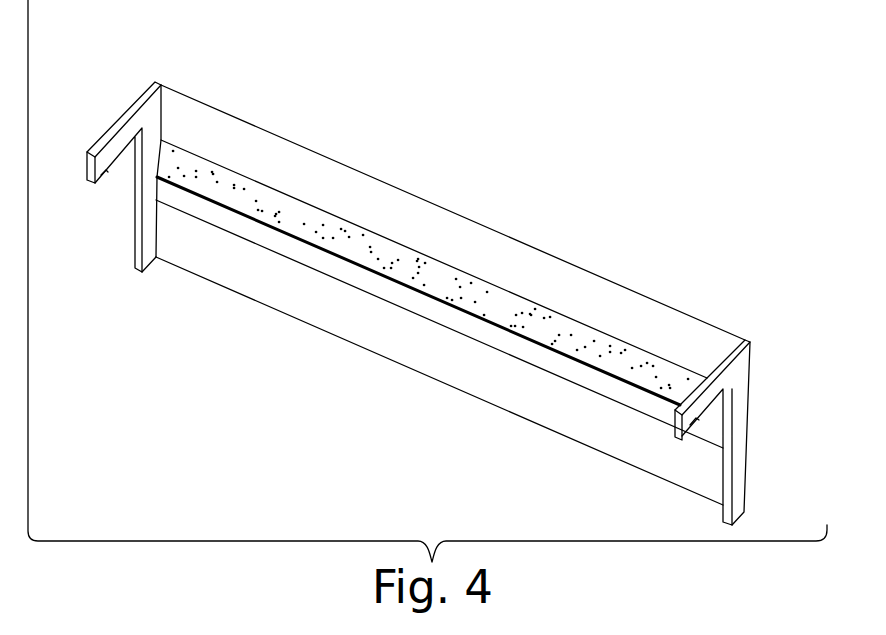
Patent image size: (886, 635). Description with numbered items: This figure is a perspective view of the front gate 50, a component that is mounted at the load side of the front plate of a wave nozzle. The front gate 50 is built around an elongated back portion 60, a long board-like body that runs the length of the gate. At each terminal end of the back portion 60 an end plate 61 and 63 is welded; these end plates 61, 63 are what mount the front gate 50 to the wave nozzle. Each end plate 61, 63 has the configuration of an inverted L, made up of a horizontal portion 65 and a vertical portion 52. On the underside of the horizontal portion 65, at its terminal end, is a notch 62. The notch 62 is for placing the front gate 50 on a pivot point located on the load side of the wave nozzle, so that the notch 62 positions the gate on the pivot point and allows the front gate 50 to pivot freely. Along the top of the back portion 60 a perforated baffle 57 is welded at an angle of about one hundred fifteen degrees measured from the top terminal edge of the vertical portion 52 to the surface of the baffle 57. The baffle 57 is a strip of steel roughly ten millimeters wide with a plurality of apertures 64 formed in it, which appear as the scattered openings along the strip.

The front gate 50 is at (483, 92).
The vertical portion 52 is at (745, 462).
The perforated baffle 57 is at (307, 245).
The back portion 60 is at (212, 268).
The end plate 61 is at (110, 125).
The notch 62 is at (104, 163).
The end plate 63 is at (730, 378).
The apertures 64 is at (448, 273).
The horizontal portion 65 is at (697, 417).